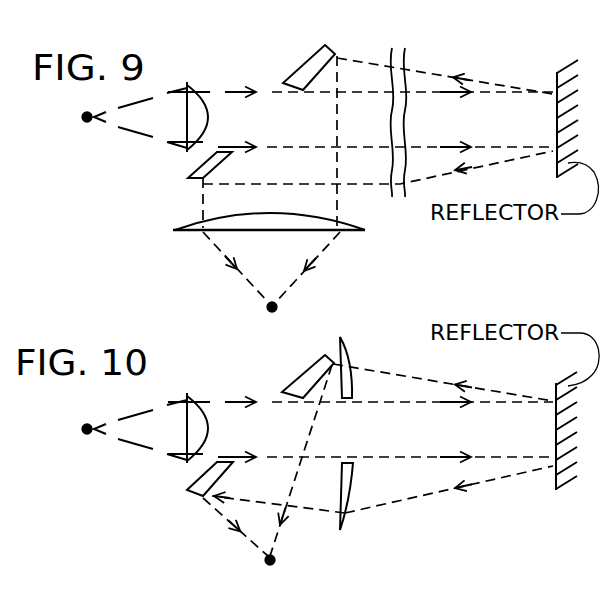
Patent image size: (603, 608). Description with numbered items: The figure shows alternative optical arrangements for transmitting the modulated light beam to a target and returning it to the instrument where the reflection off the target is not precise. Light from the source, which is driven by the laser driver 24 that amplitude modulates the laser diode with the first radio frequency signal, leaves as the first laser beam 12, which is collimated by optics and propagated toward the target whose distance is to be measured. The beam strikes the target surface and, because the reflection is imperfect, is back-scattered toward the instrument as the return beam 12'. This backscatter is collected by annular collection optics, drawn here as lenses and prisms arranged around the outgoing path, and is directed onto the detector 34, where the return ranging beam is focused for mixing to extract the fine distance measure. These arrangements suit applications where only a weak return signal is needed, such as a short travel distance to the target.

In FIG. 9, the first laser beam 12 is at (212, 98).
In FIG. 10, the first laser beam 12 is at (212, 414).
In FIG. 9, the return beam 12' is at (445, 68).
In FIG. 10, the return beam 12' is at (443, 377).
In FIG. 9, the laser driver 24 is at (96, 128).
In FIG. 10, the laser driver 24 is at (96, 440).
In FIG. 9, the detector 34 is at (284, 306).
In FIG. 10, the detector 34 is at (282, 559).